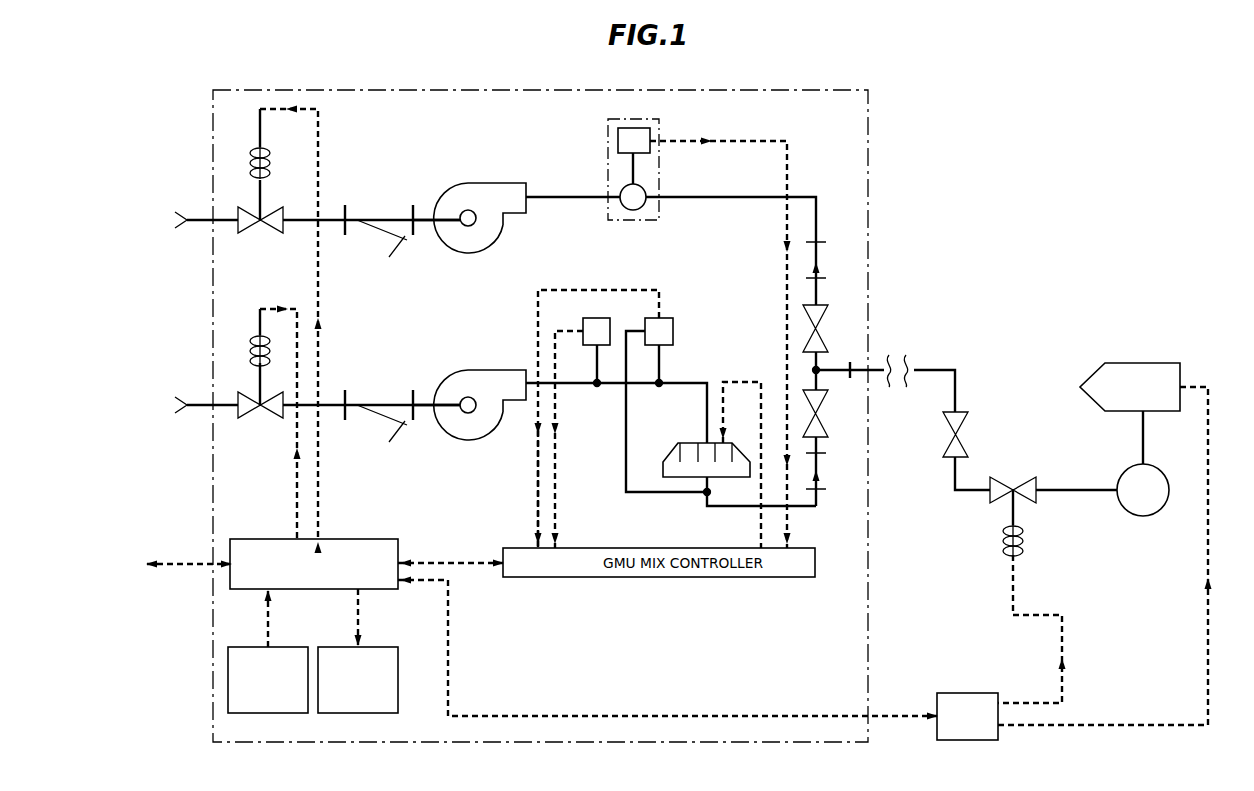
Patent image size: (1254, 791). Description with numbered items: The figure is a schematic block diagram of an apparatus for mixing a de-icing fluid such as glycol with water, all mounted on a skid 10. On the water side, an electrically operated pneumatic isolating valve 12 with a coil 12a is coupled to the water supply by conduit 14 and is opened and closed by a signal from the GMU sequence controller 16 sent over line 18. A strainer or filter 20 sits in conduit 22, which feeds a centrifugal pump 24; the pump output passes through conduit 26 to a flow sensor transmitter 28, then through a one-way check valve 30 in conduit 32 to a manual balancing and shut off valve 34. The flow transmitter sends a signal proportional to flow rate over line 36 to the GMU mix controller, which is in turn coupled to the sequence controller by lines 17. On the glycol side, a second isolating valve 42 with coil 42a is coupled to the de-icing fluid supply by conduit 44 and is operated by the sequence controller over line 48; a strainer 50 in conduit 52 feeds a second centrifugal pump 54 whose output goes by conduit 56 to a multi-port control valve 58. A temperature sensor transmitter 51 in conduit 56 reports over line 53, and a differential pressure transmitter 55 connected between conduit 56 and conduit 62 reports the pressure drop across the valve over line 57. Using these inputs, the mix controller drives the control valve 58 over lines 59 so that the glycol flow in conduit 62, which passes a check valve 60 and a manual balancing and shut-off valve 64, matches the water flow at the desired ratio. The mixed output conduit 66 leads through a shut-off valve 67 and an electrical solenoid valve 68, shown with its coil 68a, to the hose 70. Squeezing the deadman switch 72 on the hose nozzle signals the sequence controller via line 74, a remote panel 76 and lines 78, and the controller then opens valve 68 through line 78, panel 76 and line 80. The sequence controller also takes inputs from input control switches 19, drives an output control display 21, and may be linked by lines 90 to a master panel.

The skid 10 is at (244, 90).
The electrically operated pneumatic isolating valve 12 is at (263, 233).
The coil 12a is at (255, 165).
The conduit 14 is at (196, 220).
The GMU sequence controller 16 is at (369, 539).
The lines 17 is at (449, 558).
The line / GMU mix controller 18 is at (320, 118).
The input control switches 19 is at (244, 647).
The strainer or filter 20 is at (373, 242).
The output control display 21 is at (382, 647).
The conduit 22 is at (436, 214).
The centrifugal pump 24 is at (494, 183).
The conduit 26 is at (556, 198).
The flow sensor transmitter 28 is at (608, 136).
The one-way check valve 30 is at (820, 243).
The conduit 32 is at (810, 197).
The manual balancing and shut off valve 34 is at (818, 342).
The line 36 is at (760, 141).
The electrically operated pneumatic isolating valve 42 is at (263, 418).
The coil 42a is at (254, 350).
The conduit 44 is at (197, 404).
The line 48 is at (296, 490).
The strainer or filter 50 is at (374, 430).
The temperature sensor transmitter 51 is at (592, 290).
The conduit 52 is at (437, 400).
The line 53 is at (556, 448).
The centrifugal pump 54 is at (489, 370).
The differential pressure transmitter 55 is at (671, 320).
The conduit 56 is at (684, 383).
The line 57 is at (538, 478).
The multi-port control valve 58 is at (672, 455).
The lines 59 is at (748, 382).
The one-way check valve 60 is at (818, 490).
The conduit 62 is at (723, 506).
The manual balancing and shut-off valve 64 is at (818, 412).
The mixed output conduit 66 is at (924, 368).
The shut-off valve 67 is at (966, 416).
The electrical solenoid valve 68 is at (1014, 478).
The solenoid coil of dispensing valve 68a is at (1002, 545).
The hose 70 is at (1124, 466).
The deadman switch 72 is at (1148, 363).
The line 74 is at (1209, 470).
The remote panel 76 is at (972, 693).
The lines 78 is at (893, 714).
The line 80 is at (1062, 633).
The lines 90 is at (186, 561).